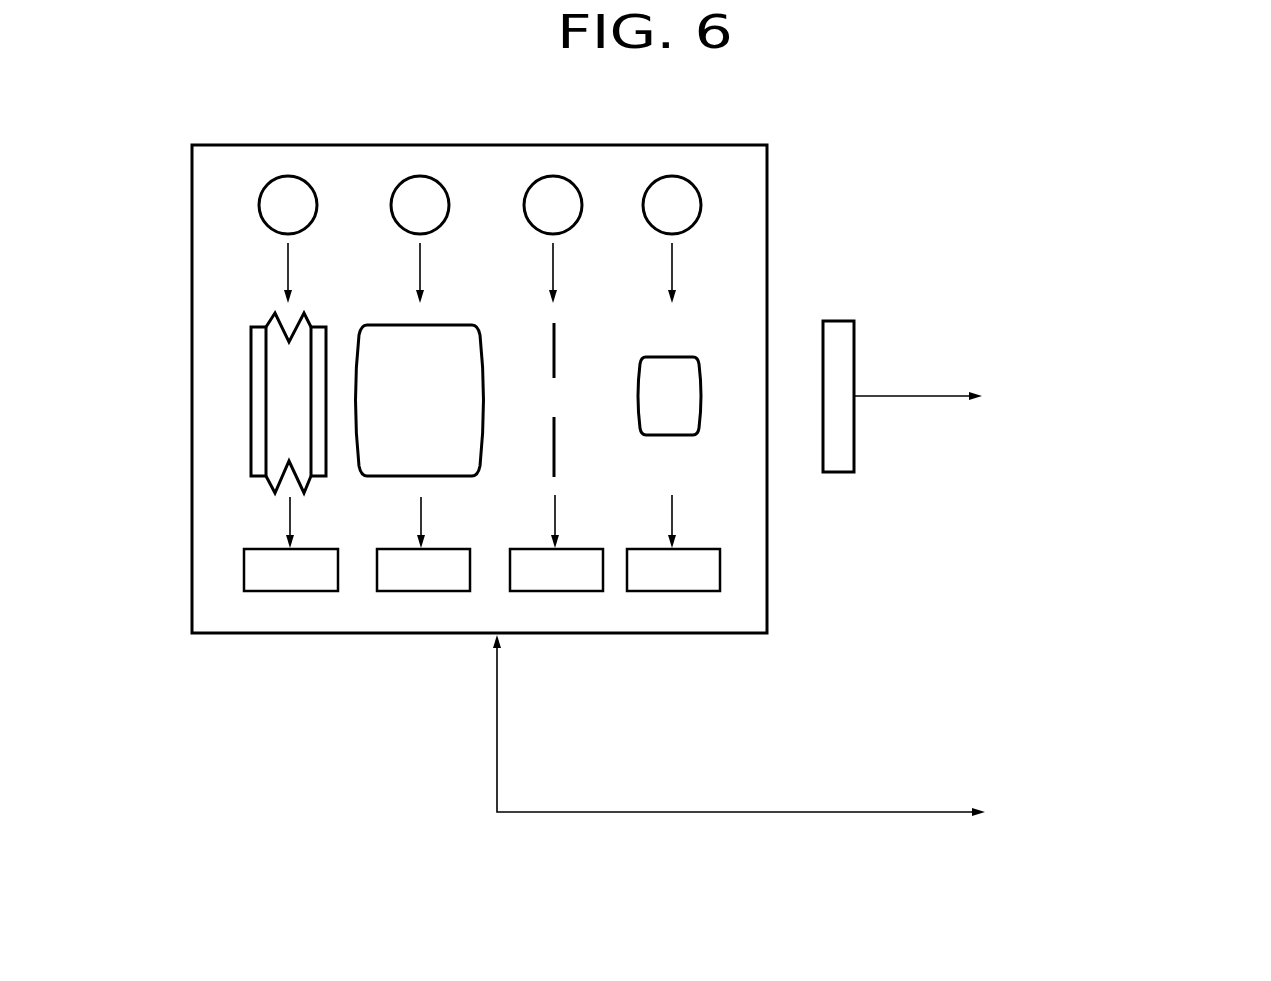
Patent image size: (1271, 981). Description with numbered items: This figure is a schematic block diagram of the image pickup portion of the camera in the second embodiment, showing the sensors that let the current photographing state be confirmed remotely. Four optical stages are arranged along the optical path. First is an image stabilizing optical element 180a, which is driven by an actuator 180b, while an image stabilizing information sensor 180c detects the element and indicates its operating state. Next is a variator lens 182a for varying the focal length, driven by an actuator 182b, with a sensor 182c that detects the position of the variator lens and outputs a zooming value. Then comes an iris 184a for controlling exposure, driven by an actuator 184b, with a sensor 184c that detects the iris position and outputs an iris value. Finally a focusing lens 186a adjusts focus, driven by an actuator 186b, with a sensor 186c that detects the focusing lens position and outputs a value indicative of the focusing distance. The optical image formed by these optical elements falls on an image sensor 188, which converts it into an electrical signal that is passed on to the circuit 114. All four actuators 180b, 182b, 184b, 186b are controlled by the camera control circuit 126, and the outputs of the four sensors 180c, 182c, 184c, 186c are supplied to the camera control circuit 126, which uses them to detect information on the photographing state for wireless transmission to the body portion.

The image stabilizing optical element 180a is at (277, 329).
The actuator 180b is at (285, 190).
The image stabilizing information sensor 180c is at (292, 591).
The variator lens 182a is at (390, 342).
The actuator 182b is at (422, 190).
The sensor 182c is at (416, 591).
The iris 184a is at (553, 362).
The actuator 184b is at (555, 190).
The sensor 184c is at (550, 591).
The focusing lens 186a is at (656, 368).
The actuator 186b is at (674, 190).
The sensor 186c is at (668, 591).
The image sensor 188 is at (837, 335).
The signal processing circuit 114 is at (954, 396).
The camera control circuit 126 is at (850, 741).